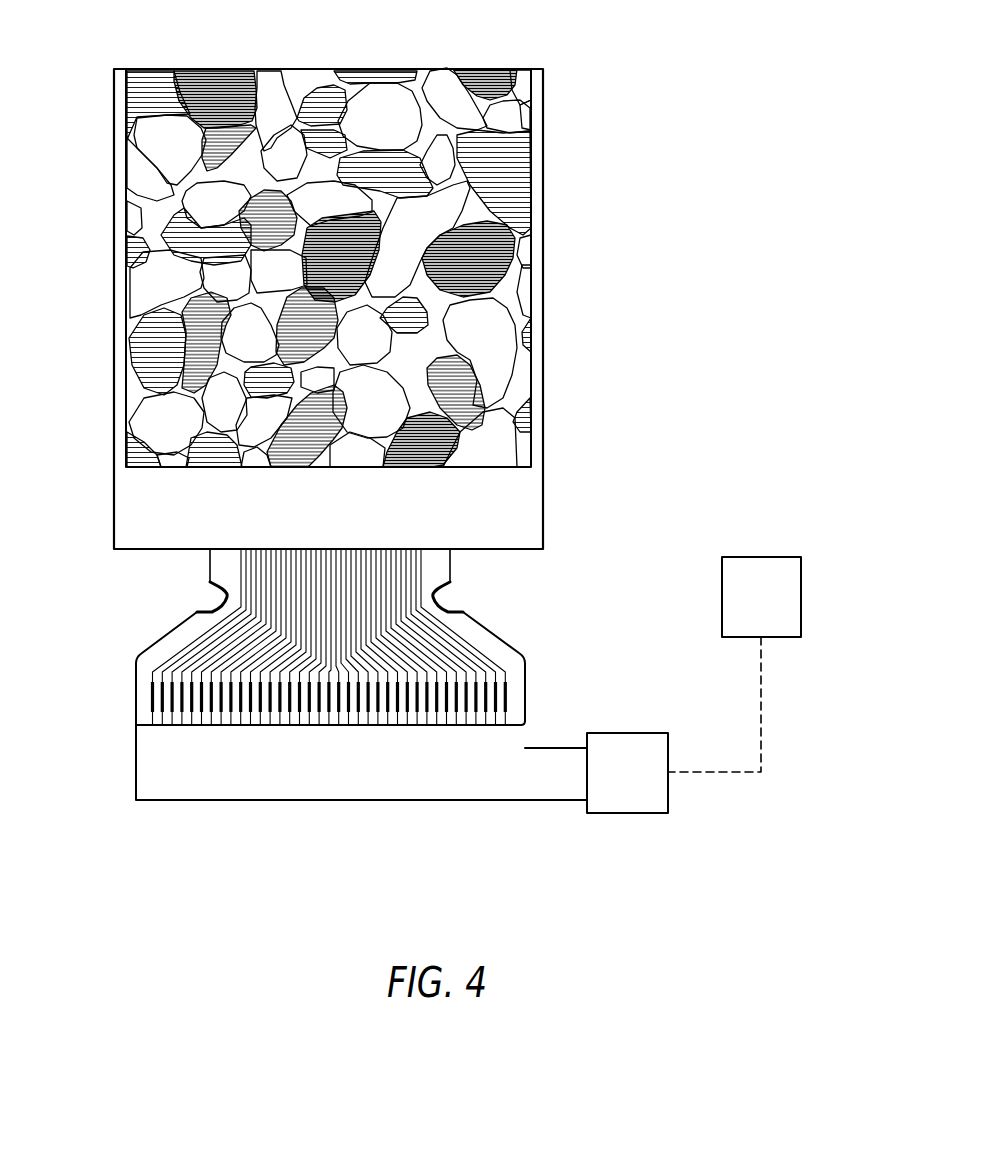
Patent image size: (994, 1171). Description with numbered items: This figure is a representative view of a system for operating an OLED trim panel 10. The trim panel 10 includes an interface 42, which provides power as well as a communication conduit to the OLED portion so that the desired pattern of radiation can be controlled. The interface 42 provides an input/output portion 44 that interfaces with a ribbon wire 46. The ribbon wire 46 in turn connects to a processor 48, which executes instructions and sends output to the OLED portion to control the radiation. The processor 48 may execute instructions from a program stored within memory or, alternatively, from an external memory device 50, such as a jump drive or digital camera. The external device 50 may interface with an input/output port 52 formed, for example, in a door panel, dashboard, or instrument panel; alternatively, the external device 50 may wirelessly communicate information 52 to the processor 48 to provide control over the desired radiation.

The trim panel 10 is at (633, 77).
The interface 42 is at (566, 603).
The input/output portion 44 is at (189, 568).
The ribbon wire 46 is at (148, 769).
The processor 48 is at (655, 733).
The external memory device 50 is at (792, 557).
The input/output port 52 is at (761, 700).